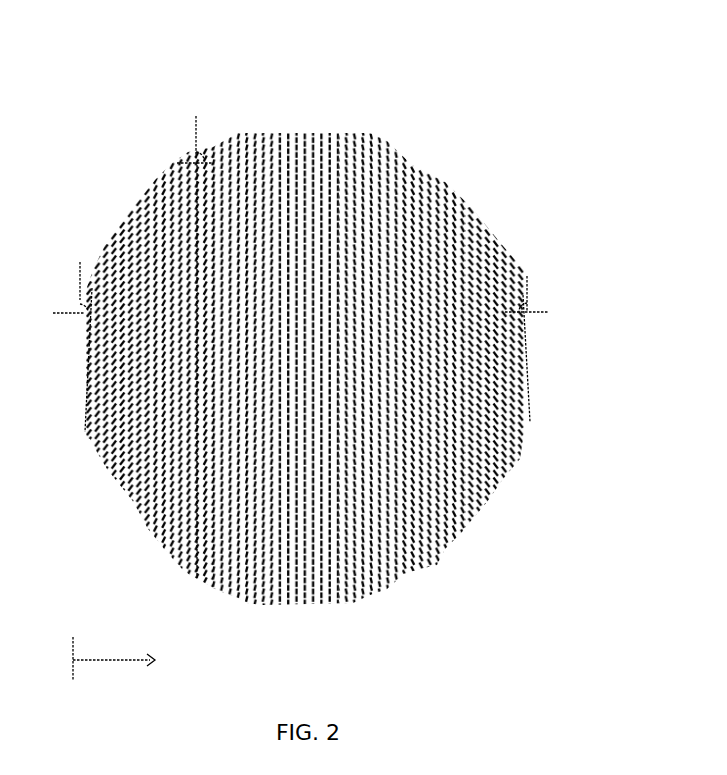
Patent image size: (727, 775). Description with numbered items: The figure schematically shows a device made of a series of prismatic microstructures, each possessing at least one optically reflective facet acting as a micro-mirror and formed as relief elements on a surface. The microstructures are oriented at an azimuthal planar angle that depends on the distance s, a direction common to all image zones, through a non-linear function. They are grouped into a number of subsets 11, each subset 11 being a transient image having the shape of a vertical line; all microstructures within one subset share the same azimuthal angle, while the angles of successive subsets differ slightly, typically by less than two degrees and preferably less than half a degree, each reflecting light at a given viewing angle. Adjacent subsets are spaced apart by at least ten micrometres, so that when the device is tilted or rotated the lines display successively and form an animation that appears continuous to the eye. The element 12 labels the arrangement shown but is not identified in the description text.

The array of inclined elements (rows at angles alpha) 12 is at (532, 326).
The subsets of microstructures 11 is at (193, 576).
The direction s is at (120, 658).